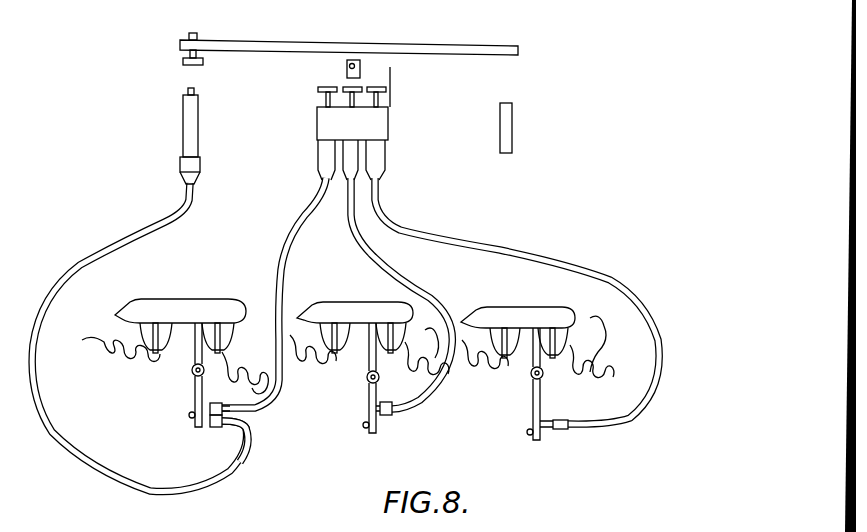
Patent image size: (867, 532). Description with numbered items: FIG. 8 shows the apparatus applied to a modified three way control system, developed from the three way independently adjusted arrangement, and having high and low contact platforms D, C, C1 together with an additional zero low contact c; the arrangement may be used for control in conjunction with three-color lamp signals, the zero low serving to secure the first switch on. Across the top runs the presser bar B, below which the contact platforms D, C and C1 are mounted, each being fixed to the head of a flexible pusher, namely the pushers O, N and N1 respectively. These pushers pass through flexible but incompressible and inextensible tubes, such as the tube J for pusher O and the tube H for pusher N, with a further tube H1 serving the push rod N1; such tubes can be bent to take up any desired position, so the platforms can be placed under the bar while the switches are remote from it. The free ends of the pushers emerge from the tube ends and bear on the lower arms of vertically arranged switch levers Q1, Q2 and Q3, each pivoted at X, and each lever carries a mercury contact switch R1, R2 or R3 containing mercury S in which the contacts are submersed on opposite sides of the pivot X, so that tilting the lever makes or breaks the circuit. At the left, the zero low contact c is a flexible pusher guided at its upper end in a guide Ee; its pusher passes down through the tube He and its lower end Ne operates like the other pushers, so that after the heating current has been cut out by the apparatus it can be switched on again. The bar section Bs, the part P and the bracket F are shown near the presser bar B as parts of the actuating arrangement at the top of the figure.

The presser bar B is at (432, 46).
The pin P is at (356, 60).
The contact platform C is at (362, 86).
The bracket F is at (346, 72).
The contact platform C1 is at (329, 88).
The contact platform D is at (386, 81).
The bar section Bs is at (513, 121).
The flexible pusher c is at (196, 93).
The guide Ee is at (199, 143).
The hose He is at (107, 256).
The hose end Ne is at (206, 428).
The hose H1 is at (295, 256).
The flexible tube H is at (424, 273).
The flexible tube J is at (531, 261).
The teat cup cluster R3 is at (182, 308).
The teat cup cluster R2 is at (337, 308).
The teat cup cluster R1 is at (509, 310).
The pivot X is at (192, 372).
The flexible push rod N1 is at (194, 406).
The coupling Q3 is at (257, 410).
The switch lever Q2 is at (369, 412).
The flexible pusher N is at (383, 418).
The switch lever Q1 is at (541, 396).
The flexible pusher O is at (547, 431).
The mercury S is at (189, 418).